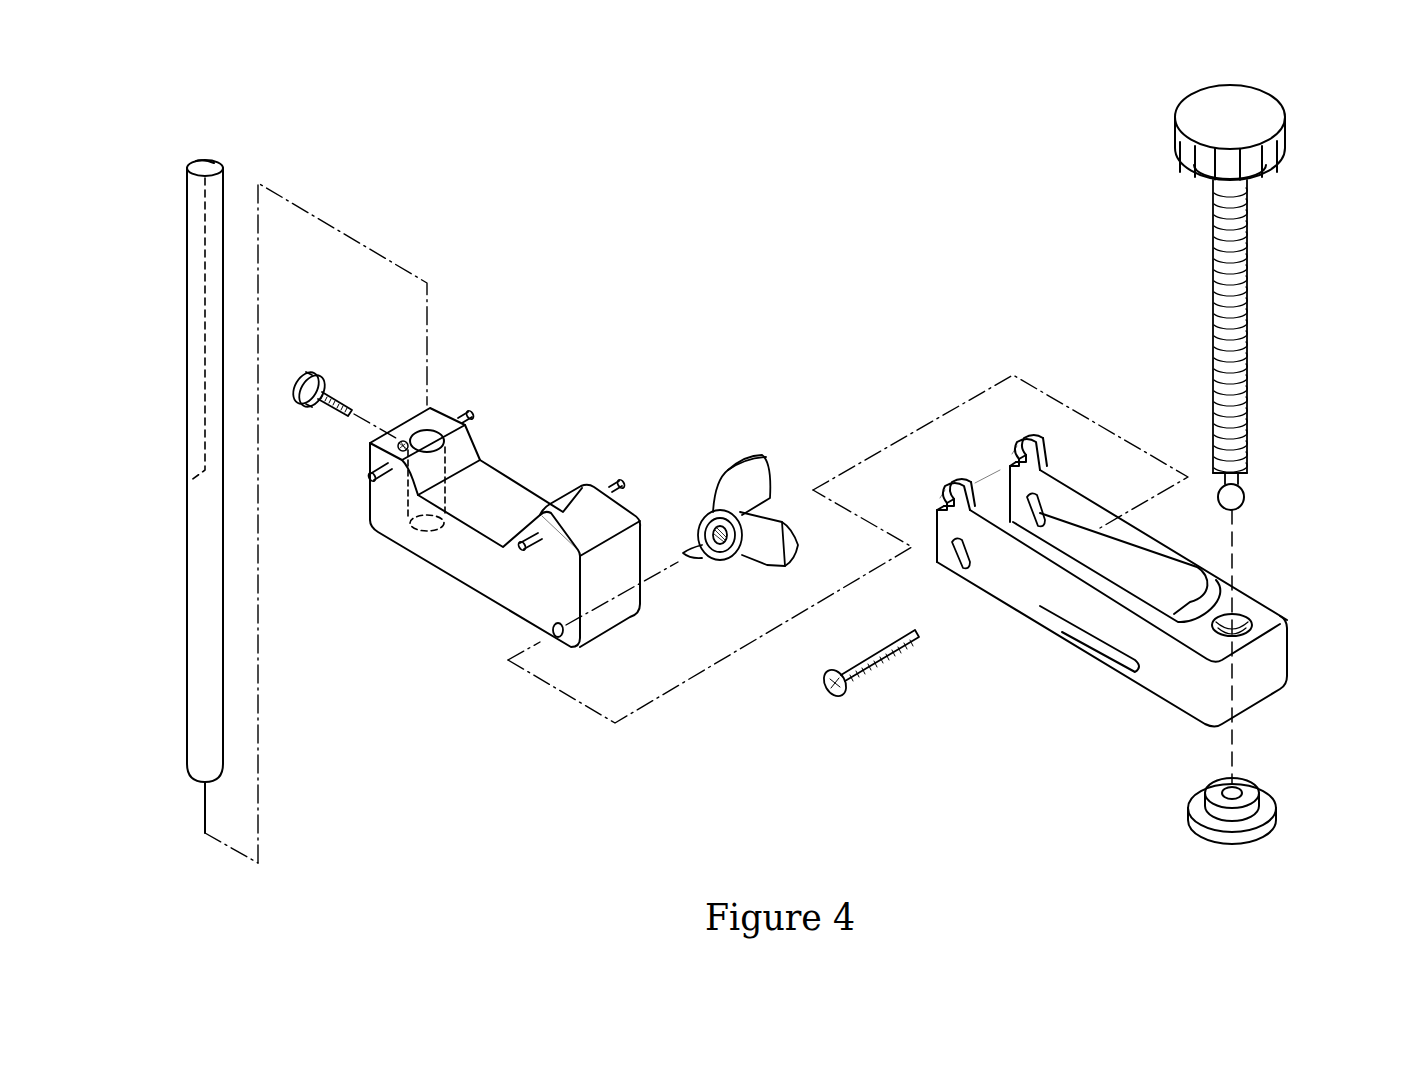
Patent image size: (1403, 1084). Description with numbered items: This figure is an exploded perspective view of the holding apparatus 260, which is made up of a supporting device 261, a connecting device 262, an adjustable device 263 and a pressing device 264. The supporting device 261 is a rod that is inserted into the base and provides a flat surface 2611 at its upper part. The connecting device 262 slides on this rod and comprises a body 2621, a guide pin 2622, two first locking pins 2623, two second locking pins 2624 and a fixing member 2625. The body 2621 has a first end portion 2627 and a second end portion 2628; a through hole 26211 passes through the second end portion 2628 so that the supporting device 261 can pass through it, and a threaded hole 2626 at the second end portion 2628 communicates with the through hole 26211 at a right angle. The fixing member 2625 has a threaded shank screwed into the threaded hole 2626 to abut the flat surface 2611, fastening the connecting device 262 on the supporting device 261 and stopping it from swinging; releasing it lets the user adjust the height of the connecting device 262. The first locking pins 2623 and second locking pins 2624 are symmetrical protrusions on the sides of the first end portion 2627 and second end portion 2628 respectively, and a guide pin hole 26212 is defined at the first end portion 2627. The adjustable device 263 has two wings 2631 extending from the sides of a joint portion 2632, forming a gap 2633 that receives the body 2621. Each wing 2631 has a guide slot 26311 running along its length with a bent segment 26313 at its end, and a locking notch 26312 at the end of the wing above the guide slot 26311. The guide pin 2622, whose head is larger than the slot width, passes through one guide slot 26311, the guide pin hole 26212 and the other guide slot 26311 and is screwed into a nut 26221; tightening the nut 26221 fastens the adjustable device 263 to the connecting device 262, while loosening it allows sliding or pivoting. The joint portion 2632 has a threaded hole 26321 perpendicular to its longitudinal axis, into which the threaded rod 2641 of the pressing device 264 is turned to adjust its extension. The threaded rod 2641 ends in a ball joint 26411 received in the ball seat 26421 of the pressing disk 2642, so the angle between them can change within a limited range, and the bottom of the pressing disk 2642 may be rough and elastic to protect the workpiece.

The holding apparatus 260 is at (717, 258).
The supporting device 261 is at (161, 495).
The flat surface 2611 is at (210, 160).
The connecting device 262 is at (540, 523).
The body 2621 is at (445, 565).
The through hole 26211 is at (440, 430).
The guide pin hole 26212 is at (560, 641).
The guide pin 2622 is at (833, 697).
The nut 26221 is at (752, 455).
The first locking pins 2623 is at (618, 486).
The second locking pins 2624 is at (472, 420).
The fixing member 2625 is at (312, 372).
The threaded hole 2626 is at (395, 444).
The first end portion 2627 is at (583, 493).
The second end portion 2628 is at (430, 418).
The adjustable device 263 is at (1093, 543).
The wings 2631 is at (1120, 498).
The guide slot 26311 is at (1137, 678).
The locking notch 26312 is at (1013, 452).
The bent segment 26313 is at (1045, 510).
The joint portion 2632 is at (1159, 604).
The threaded hole 26321 is at (1250, 612).
The gap 2633 is at (975, 483).
The pressing device 264 is at (1216, 434).
The threaded rod 2641 is at (1250, 293).
The ball joint 26411 is at (1244, 498).
The pressing disk 2642 is at (1278, 801).
The ball seat 26421 is at (1258, 790).